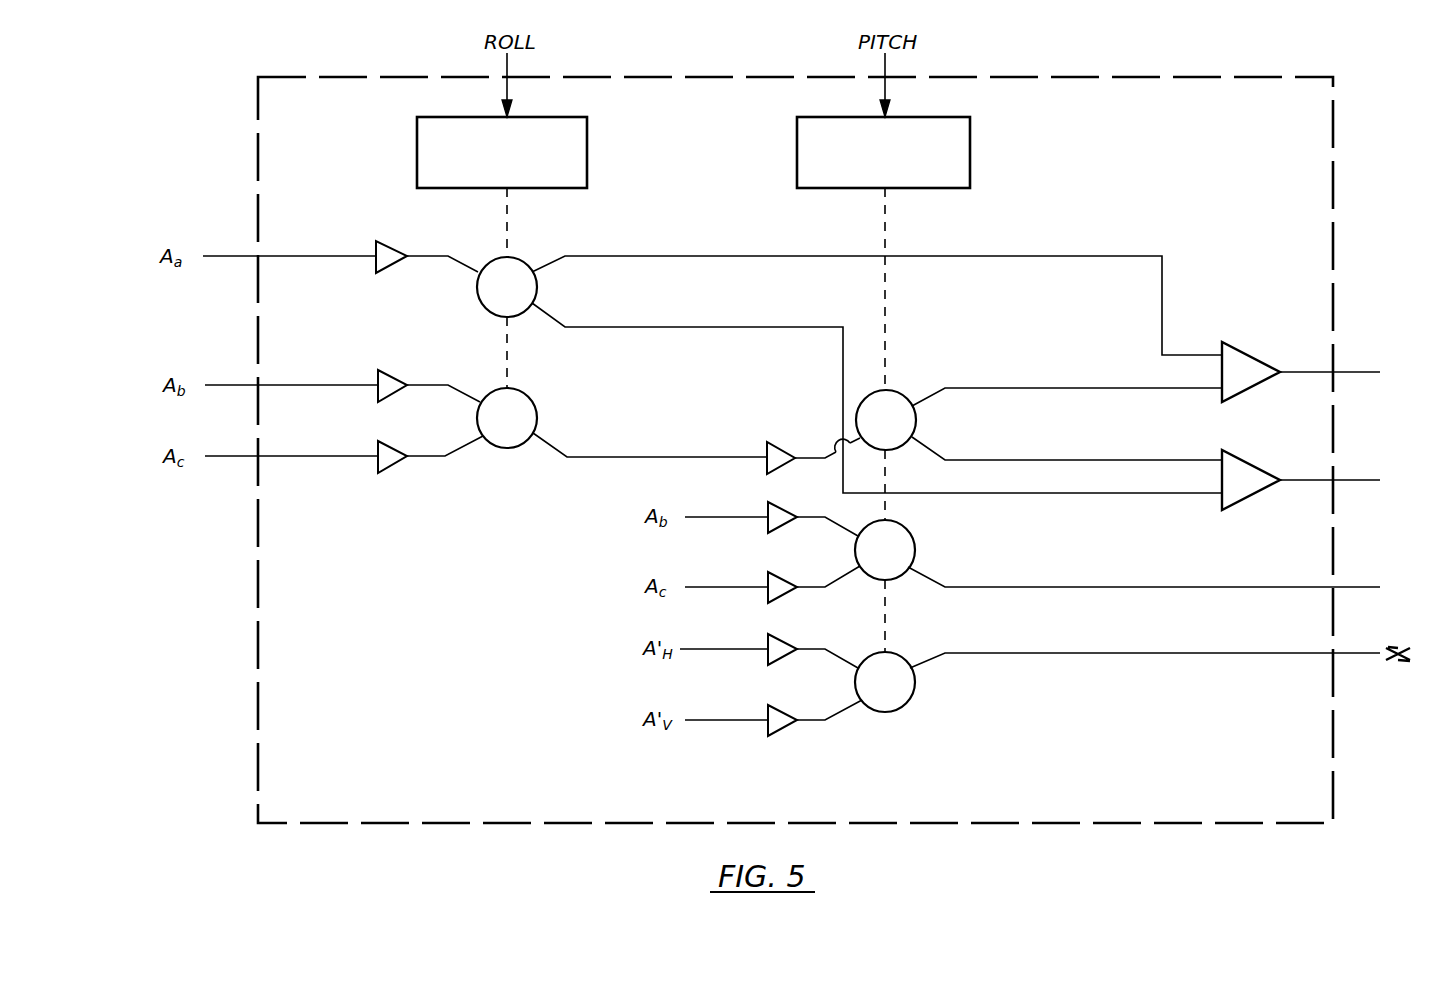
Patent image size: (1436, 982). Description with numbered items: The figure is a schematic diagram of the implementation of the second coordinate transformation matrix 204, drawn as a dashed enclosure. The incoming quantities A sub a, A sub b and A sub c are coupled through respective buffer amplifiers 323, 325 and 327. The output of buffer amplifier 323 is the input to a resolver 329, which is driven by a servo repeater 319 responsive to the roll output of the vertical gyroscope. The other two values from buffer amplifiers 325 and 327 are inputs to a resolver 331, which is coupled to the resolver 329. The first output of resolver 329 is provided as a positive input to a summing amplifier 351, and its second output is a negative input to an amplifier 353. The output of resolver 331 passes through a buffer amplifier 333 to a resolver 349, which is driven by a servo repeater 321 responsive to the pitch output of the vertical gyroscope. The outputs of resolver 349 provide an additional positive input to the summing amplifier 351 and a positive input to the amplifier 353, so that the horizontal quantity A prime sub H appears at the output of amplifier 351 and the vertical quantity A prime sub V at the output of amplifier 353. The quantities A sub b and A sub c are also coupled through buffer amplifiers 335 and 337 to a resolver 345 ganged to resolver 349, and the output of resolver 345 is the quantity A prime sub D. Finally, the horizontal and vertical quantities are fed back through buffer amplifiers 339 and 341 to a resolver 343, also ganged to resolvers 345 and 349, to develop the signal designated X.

The coordinate transformation matrix 204 is at (1193, 77).
The servo repeater 319 is at (587, 163).
The servo repeater 321 is at (970, 150).
The buffer amplifier 323 is at (388, 245).
The buffer amplifier 325 is at (388, 370).
The buffer amplifier 327 is at (395, 441).
The resolver 329 is at (490, 314).
The resolver 331 is at (510, 448).
The buffer amplifier 333 is at (790, 442).
The buffer amplifier 335 is at (800, 495).
The buffer amplifier 337 is at (800, 566).
The buffer amplifier 339 is at (800, 628).
The buffer amplifier 341 is at (792, 709).
The resolver 343 is at (912, 695).
The resolver 345 is at (915, 540).
The resolver 349 is at (897, 397).
The summing amplifier 351 is at (1245, 352).
The amplifier 353 is at (1238, 457).